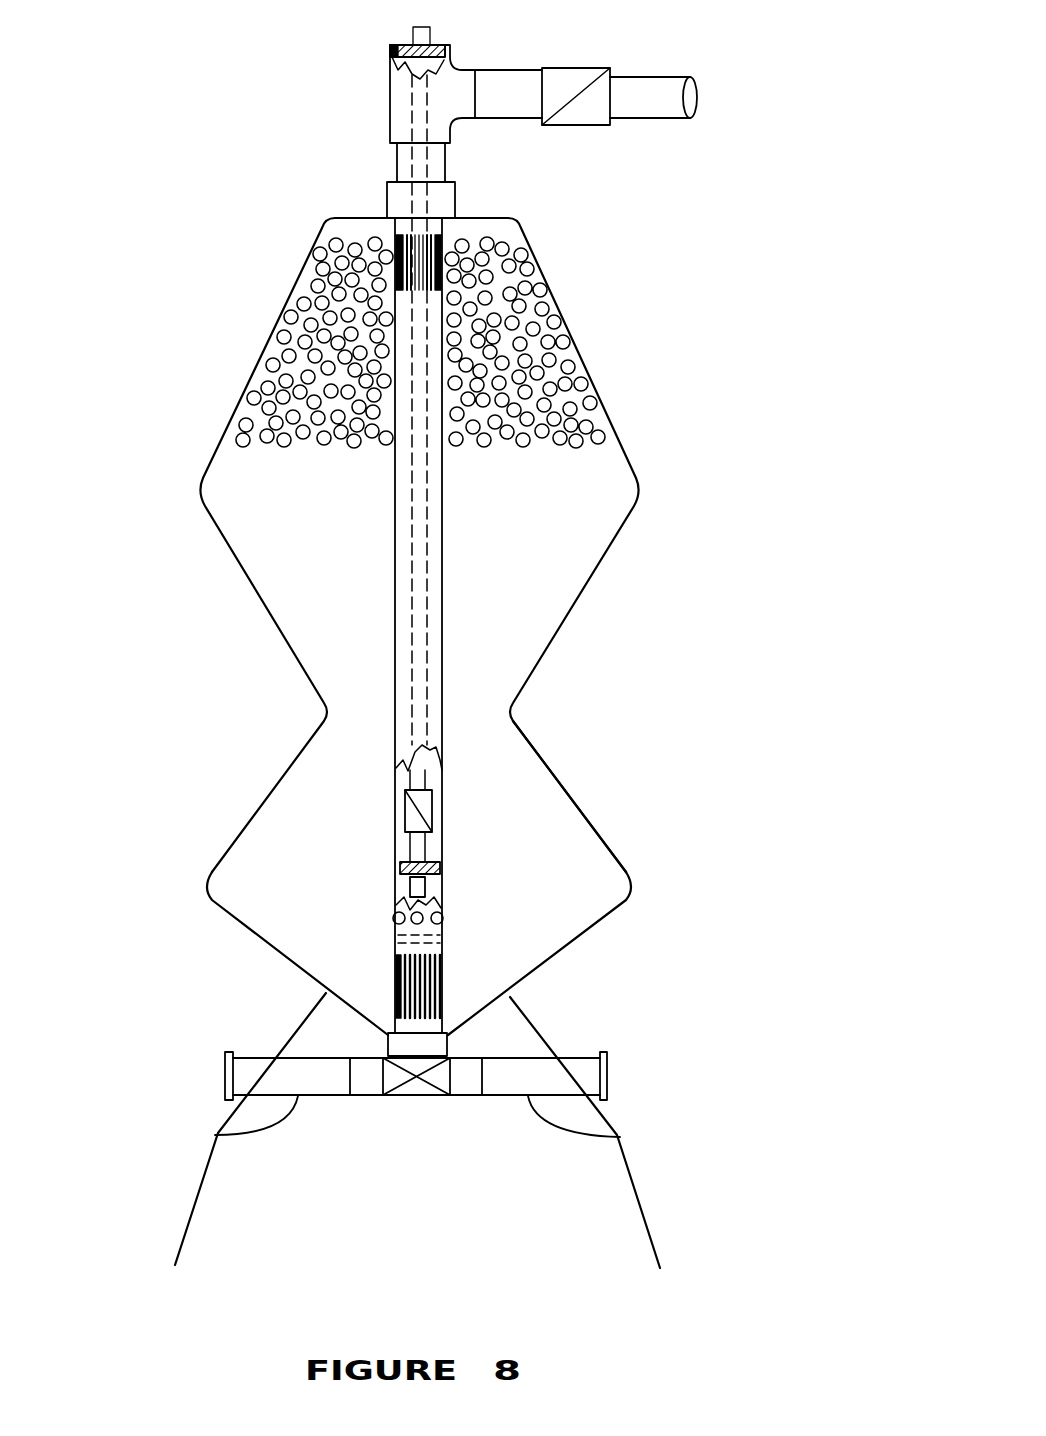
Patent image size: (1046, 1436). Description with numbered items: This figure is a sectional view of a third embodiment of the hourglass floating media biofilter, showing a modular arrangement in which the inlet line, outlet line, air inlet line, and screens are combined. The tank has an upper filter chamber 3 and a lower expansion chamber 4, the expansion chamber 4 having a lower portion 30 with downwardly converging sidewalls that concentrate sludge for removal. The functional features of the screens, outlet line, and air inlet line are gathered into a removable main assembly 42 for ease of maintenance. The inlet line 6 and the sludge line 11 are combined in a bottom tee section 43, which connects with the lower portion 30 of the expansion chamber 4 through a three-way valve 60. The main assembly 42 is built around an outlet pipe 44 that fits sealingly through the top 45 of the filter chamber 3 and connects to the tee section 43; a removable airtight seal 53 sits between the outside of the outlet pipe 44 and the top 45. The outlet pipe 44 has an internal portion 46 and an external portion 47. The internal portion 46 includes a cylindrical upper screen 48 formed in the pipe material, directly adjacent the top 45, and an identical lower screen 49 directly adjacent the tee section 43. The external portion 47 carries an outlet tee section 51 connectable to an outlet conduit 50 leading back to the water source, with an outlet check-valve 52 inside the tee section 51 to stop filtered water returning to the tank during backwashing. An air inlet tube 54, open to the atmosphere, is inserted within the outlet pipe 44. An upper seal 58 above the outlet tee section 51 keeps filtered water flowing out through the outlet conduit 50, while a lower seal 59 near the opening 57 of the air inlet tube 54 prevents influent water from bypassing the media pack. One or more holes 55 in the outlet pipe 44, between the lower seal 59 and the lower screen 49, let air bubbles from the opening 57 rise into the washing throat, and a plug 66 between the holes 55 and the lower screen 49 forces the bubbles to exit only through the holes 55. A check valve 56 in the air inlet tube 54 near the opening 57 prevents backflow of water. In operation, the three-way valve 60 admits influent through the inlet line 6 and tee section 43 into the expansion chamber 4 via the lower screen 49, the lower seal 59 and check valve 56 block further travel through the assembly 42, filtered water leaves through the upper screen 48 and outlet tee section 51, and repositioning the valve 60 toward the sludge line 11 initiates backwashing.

The filter chamber 3 is at (675, 345).
The expansion chamber 4 is at (155, 885).
The inlet line 6 is at (215, 1135).
The sludge line 11 is at (618, 1138).
The lower portion of expansion chamber 30 is at (585, 981).
The main assembly 42 is at (500, 804).
The bottom tee section 43 is at (423, 1118).
The outlet pipe 44 is at (442, 753).
The top of filtration chamber 45 is at (490, 220).
The internal portion 46 is at (376, 401).
The external portion 47 is at (352, 151).
The upper screen 48 is at (397, 243).
The lower screen 49 is at (397, 1008).
The outlet conduit 50 is at (497, 120).
The outlet tee section 51 is at (390, 103).
The outlet check-valve 52 is at (570, 68).
The removable airtight seal 53 is at (387, 202).
The air inlet tube 54 is at (427, 598).
The holes 55 is at (397, 917).
The check valve 56 is at (405, 806).
The opening of air inlet tube 57 is at (425, 885).
The upper seal 58 is at (396, 48).
The lower seal 59 is at (440, 857).
The 3-way valve 60 is at (403, 1097).
The plug 66 is at (442, 943).